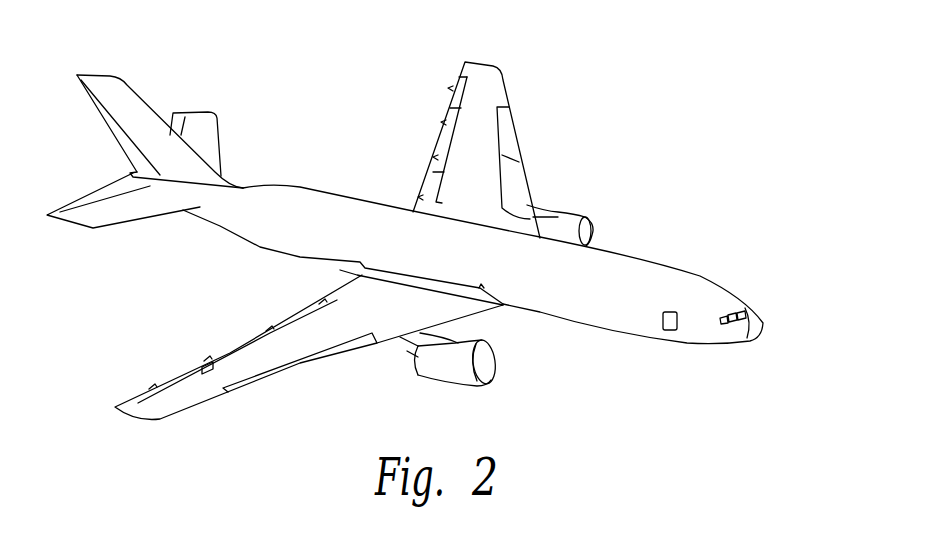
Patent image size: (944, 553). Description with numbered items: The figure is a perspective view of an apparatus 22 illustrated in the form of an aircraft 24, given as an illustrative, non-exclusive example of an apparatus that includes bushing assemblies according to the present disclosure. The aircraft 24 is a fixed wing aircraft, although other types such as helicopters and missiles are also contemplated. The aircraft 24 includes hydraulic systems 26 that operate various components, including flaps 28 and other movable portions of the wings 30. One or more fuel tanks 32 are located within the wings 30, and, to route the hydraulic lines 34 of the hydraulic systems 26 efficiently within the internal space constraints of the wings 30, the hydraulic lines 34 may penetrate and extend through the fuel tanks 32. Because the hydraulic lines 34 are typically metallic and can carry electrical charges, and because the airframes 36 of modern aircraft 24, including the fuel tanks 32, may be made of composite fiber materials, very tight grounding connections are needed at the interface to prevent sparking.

The apparatus 22 is at (797, 100).
The aircraft 24 is at (690, 120).
The hydraulic systems 26 is at (460, 150).
The flaps 28 is at (455, 107).
The wings 30 is at (525, 178).
The fuel tanks 32 is at (428, 190).
The hydraulic lines 34 is at (450, 203).
The airframes 36 is at (593, 133).